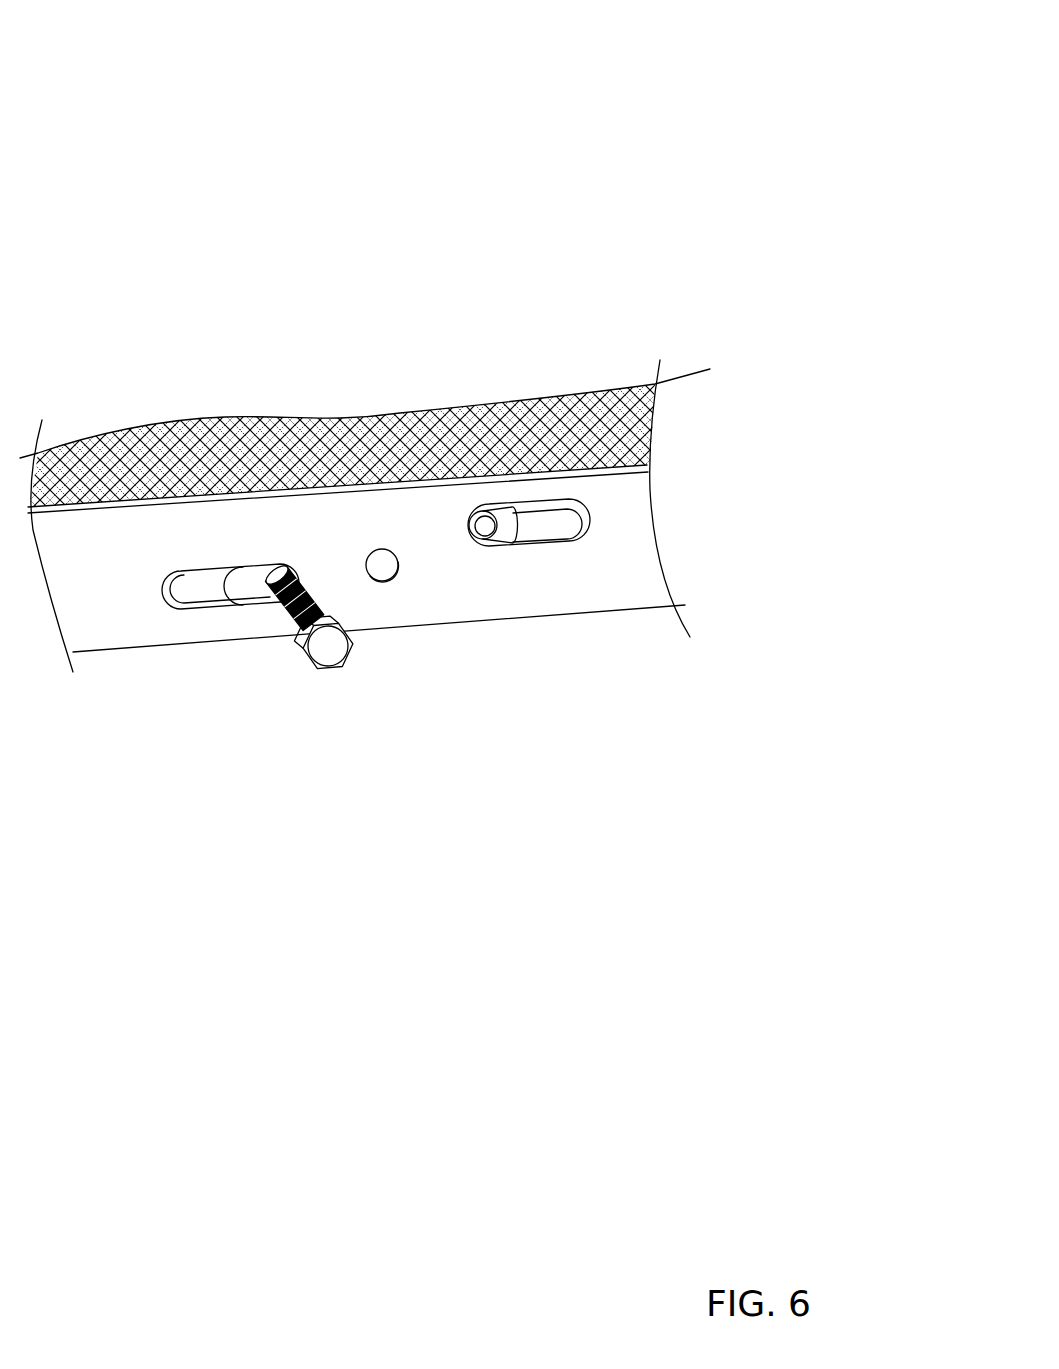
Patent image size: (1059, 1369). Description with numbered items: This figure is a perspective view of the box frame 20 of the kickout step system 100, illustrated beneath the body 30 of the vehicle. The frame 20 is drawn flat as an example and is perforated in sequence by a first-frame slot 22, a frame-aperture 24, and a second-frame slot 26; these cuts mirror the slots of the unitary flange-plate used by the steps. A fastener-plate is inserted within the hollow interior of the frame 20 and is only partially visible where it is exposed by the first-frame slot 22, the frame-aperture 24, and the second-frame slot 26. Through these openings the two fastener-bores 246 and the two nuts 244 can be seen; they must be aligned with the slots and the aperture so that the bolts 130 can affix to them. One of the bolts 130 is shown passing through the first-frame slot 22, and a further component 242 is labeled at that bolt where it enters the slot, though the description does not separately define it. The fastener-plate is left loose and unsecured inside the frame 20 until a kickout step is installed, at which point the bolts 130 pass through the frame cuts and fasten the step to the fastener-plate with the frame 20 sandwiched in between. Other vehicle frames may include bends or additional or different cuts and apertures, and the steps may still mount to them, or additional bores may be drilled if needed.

The kickout step system 100 is at (641, 86).
The box frame 20 is at (130, 623).
The body 30 is at (425, 430).
The first-frame slot 22 is at (177, 588).
The frame-aperture 24 is at (390, 585).
The second-frame slot 26 is at (563, 520).
The bolts 130 is at (327, 634).
The bolt shank 242 is at (253, 582).
The nuts 244 is at (484, 525).
The fastener-bores 246 is at (252, 600).